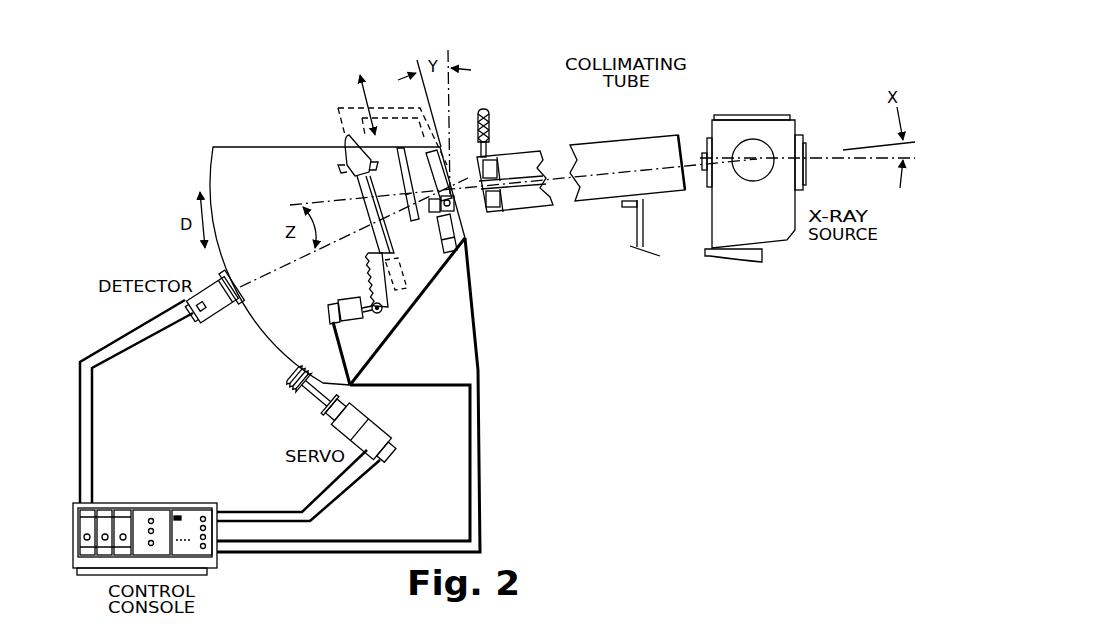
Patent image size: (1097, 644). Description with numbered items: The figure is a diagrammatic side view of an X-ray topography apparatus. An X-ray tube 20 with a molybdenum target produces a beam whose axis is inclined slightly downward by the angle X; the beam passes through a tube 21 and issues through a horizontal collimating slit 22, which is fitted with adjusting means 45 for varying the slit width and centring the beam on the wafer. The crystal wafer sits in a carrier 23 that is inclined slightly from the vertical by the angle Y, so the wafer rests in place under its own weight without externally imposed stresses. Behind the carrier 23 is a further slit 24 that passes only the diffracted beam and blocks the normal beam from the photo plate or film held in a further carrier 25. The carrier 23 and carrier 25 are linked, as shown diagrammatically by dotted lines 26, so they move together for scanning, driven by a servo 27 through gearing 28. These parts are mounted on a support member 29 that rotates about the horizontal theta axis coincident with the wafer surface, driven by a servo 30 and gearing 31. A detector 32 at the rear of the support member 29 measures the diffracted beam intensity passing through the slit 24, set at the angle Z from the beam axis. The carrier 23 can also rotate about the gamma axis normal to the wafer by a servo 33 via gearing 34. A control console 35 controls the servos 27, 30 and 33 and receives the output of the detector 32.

The X-ray tube 20 is at (783, 133).
The tube 21 is at (608, 142).
The horizontal collimating slit 22 is at (493, 211).
The carrier 23 is at (440, 172).
The further slit 24 is at (412, 178).
The further carrier 25 is at (360, 178).
The dotted lines 26 is at (398, 110).
The servo 27 is at (352, 318).
The gearing 28 is at (382, 311).
The support member 29 is at (240, 147).
The servo 30 is at (378, 438).
The gearing 31 is at (280, 378).
The detector 32 is at (224, 318).
The servo 33 is at (452, 236).
The gearing 34 is at (455, 215).
The control console 35 is at (152, 503).
The adjusting means 45 is at (489, 122).